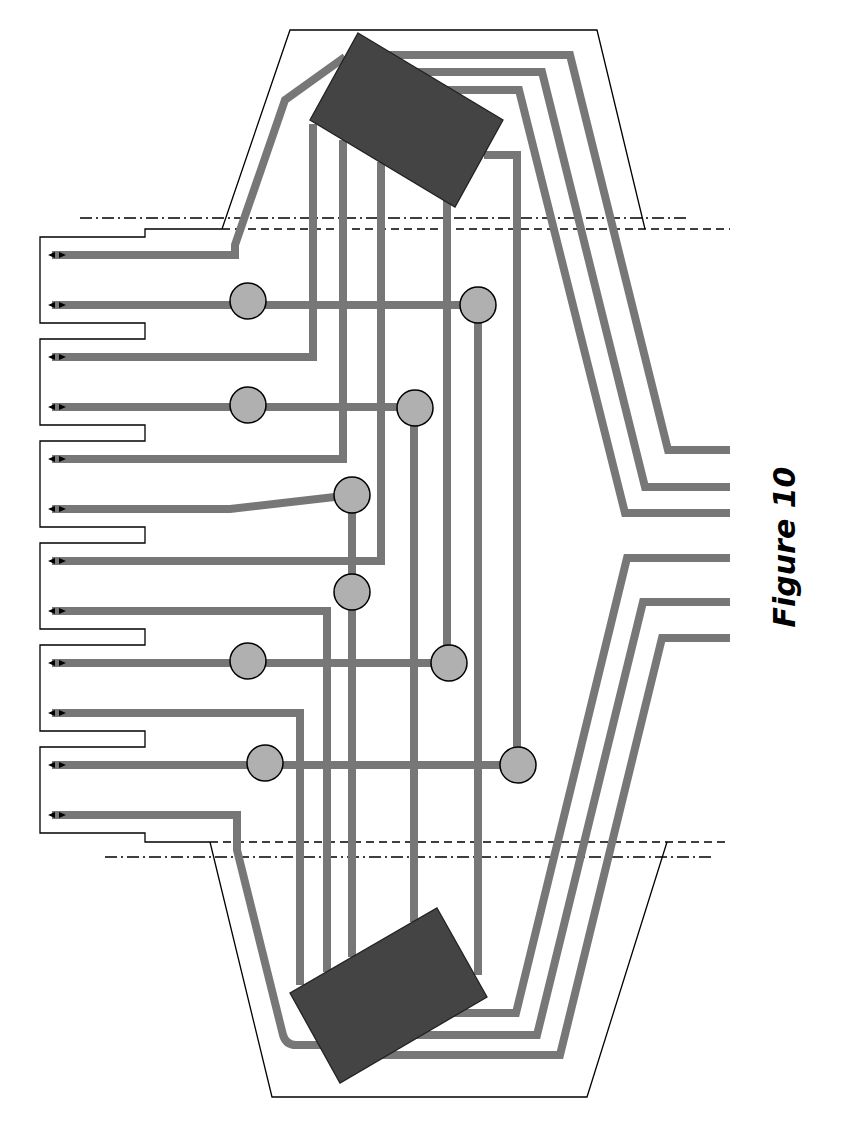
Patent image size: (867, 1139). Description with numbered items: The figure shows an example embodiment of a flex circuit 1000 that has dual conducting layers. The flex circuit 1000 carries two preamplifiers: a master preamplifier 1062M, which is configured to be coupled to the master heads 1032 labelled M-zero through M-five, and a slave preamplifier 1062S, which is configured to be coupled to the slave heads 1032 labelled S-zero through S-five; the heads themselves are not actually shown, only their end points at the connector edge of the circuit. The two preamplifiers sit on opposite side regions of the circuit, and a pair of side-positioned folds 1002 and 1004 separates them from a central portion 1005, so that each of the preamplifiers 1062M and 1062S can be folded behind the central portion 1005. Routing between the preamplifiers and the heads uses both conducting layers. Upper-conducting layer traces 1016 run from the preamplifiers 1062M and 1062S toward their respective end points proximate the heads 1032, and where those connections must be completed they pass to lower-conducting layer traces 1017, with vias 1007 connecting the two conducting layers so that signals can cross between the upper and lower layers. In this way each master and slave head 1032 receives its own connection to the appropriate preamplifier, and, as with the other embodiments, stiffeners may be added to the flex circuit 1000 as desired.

The flex circuit 1000 is at (95, 184).
The fold 1002 is at (165, 865).
The fold 1004 is at (158, 214).
The central portion 1005 is at (470, 535).
The vias 1007 is at (400, 398).
The upper-conducting layer traces 1016 is at (517, 380).
The lower-conducting layer traces 1017 is at (382, 673).
The heads 1032 is at (284, 551).
The slave preamplifier 1062S is at (308, 120).
The master preamplifier 1062M is at (489, 996).